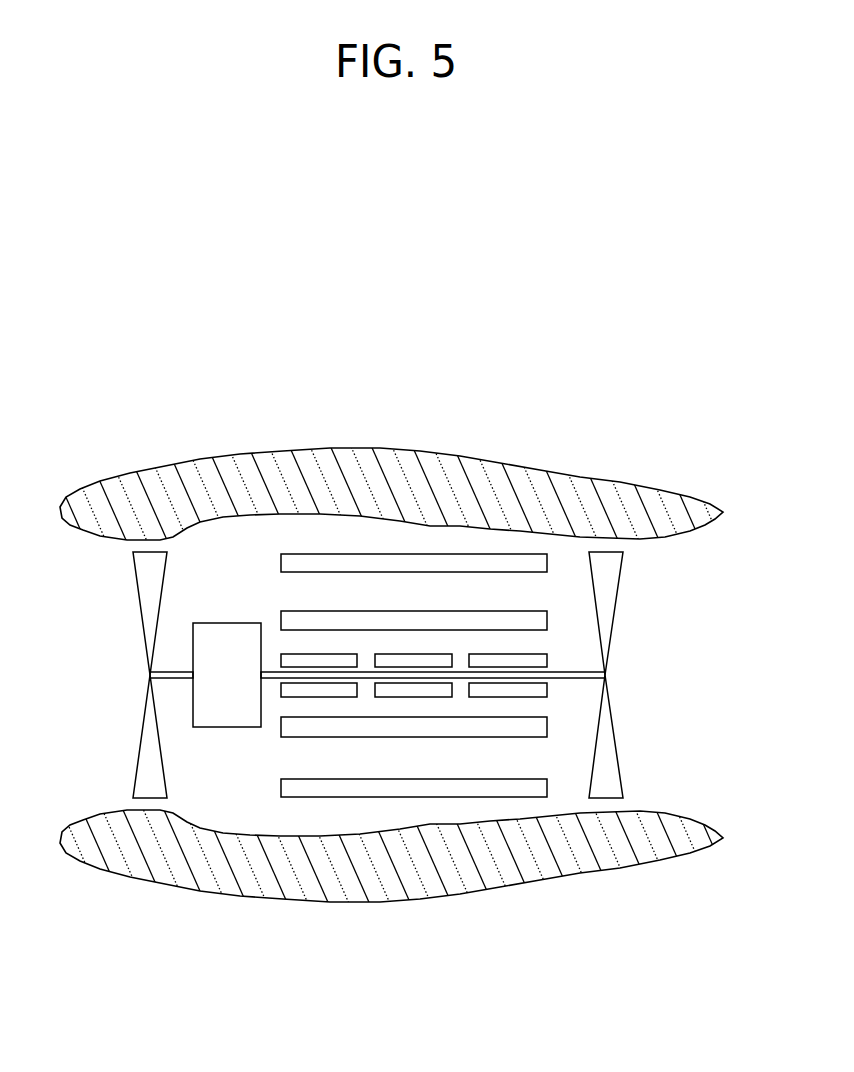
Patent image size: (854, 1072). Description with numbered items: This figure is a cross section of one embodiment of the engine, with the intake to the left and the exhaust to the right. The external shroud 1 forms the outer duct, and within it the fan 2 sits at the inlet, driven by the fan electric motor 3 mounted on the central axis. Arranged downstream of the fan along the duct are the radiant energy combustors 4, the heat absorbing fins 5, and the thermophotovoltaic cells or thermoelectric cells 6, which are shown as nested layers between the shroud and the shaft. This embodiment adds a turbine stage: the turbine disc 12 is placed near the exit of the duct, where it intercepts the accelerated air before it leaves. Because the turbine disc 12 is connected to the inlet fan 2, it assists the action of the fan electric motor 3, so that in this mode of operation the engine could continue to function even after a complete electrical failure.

The external shroud 1 is at (667, 495).
The fan 2 is at (140, 738).
The fan electric motor 3 is at (227, 623).
The radiant energy combustors 4 is at (279, 562).
The heat absorbing fins 5 is at (512, 609).
The thermophotovoltaic cells or thermoelectric cells 6 is at (525, 650).
The turbine disc 12 is at (620, 590).